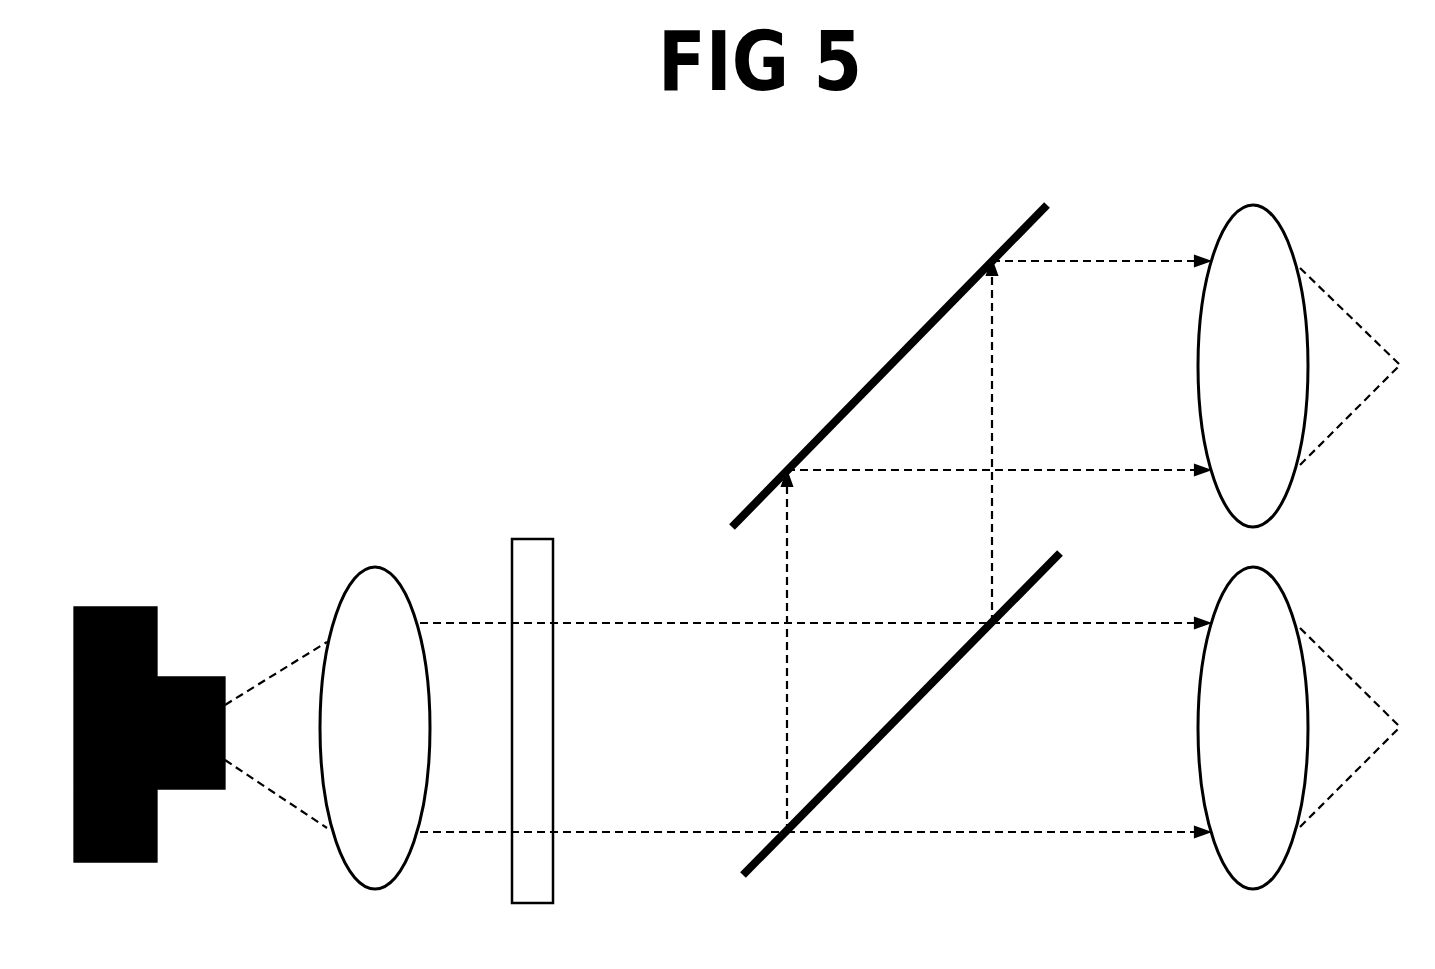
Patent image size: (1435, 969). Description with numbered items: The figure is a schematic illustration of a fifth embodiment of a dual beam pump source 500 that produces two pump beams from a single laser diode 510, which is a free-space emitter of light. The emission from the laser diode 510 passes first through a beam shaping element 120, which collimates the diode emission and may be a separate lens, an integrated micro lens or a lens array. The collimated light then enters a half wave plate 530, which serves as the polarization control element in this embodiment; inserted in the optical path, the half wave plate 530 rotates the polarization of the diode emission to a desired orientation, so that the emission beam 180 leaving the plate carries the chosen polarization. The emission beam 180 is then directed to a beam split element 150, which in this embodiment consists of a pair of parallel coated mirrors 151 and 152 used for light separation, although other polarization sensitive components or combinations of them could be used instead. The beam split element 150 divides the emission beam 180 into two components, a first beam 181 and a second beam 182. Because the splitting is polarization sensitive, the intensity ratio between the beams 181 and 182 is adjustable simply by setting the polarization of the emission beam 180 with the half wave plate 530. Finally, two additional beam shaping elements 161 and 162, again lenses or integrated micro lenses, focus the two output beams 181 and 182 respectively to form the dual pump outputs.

The dual beam pump source 500 is at (325, 278).
The laser diode 510 is at (149, 734).
The beam shaping element 120 is at (375, 728).
The half wave plate 530 is at (580, 721).
The emission beam 180 is at (608, 727).
The beam split element 150 is at (889, 366).
The coated mirror 151 is at (901, 714).
The coated mirror 152 is at (950, 442).
The first beam component 181 is at (1093, 727).
The second beam component 182 is at (1091, 544).
The beam shaping element 161 is at (1253, 728).
The beam shaping element 162 is at (1253, 366).